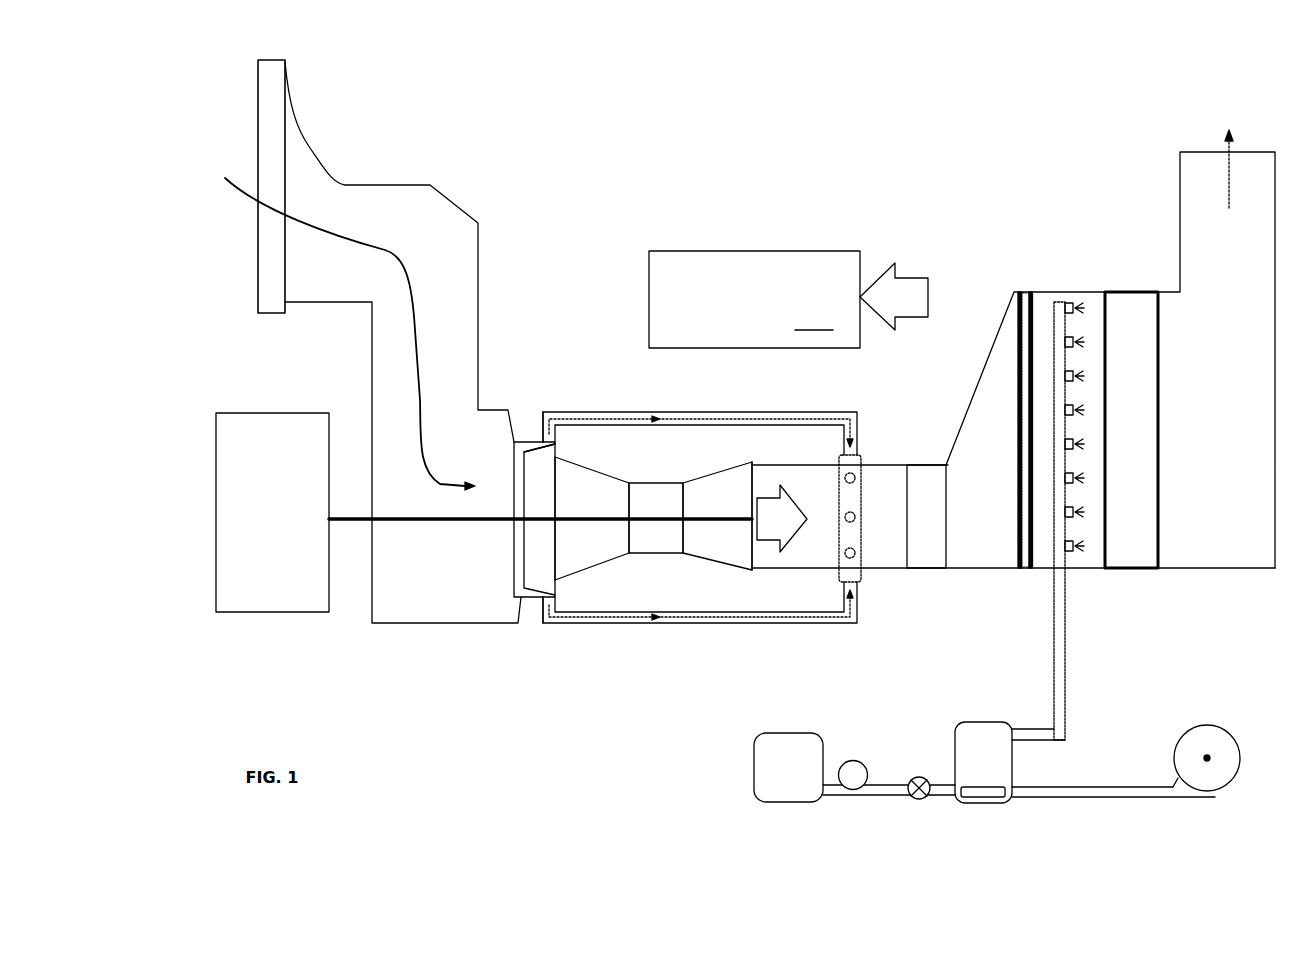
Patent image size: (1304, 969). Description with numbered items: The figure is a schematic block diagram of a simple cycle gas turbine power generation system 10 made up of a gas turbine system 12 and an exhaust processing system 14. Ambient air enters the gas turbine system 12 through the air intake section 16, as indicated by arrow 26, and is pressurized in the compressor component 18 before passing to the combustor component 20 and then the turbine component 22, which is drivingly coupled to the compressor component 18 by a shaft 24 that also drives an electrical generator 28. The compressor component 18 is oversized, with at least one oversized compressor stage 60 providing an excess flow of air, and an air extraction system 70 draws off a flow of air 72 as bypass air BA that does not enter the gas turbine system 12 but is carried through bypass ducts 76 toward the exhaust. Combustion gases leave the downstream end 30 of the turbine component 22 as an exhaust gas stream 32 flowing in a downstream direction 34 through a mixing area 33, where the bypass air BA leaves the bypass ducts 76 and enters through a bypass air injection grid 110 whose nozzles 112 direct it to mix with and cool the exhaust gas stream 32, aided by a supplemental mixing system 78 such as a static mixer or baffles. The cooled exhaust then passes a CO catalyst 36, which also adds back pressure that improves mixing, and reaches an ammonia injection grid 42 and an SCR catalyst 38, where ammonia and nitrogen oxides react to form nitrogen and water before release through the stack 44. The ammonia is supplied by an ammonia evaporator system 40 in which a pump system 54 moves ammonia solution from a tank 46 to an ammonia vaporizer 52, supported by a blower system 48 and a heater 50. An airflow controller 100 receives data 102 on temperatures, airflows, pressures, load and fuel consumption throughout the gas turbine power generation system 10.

The simple cycle gas turbine power generation system 10 is at (636, 161).
The gas turbine system 12 is at (636, 571).
The exhaust processing system 14 is at (1047, 194).
The air intake section 16 is at (360, 361).
The compressor component 18 is at (588, 508).
The combustor component 20 is at (646, 508).
The turbine component 22 is at (707, 508).
The shaft 24 is at (417, 523).
The arrow indicating air entering 26 is at (407, 270).
The electrical generator 28 is at (216, 513).
The downstream end of the turbine component 30 is at (760, 576).
The exhaust gas stream 32 is at (763, 528).
The mixing area 33 is at (808, 498).
The downstream direction 34 is at (930, 588).
The CO catalyst 36 is at (1017, 546).
The SCR catalyst 38 is at (1160, 494).
The ammonia evaporator system 40 is at (897, 851).
The ammonia injection grid 42 is at (1055, 318).
The stack 44 is at (1229, 186).
The tank 46 is at (752, 772).
The blower system 48 is at (1218, 795).
The heater 50 is at (990, 798).
The ammonia vaporizer 52 is at (974, 721).
The pump system 54 is at (845, 761).
The oversized compressor stage 60 is at (530, 508).
The air extraction system 70 is at (551, 448).
The flow of air 72 is at (558, 420).
The bypass ducts 76 is at (612, 411).
The supplemental mixing system 78 is at (915, 528).
The airflow controller 100 is at (754, 299).
The data 102 is at (913, 275).
The bypass air injection grid 110 is at (860, 455).
The nozzles 112 is at (862, 515).
The bypass air BA is at (836, 413).